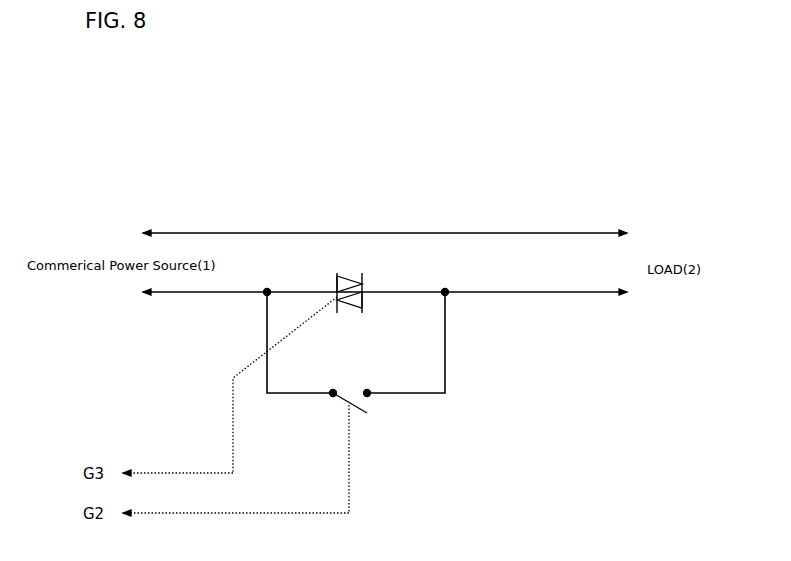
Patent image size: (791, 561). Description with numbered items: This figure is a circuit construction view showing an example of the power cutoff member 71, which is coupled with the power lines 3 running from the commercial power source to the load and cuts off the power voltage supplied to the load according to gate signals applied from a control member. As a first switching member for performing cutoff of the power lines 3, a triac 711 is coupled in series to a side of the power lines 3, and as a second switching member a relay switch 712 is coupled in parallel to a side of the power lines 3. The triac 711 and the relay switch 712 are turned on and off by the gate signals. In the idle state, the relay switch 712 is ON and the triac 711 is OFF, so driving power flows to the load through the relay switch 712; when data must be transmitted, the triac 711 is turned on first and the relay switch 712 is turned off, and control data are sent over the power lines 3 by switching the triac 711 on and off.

The power cutoff member 71 is at (468, 160).
The triac 711 is at (341, 273).
The relay switch 712 is at (367, 413).
The power lines 3 is at (535, 292).